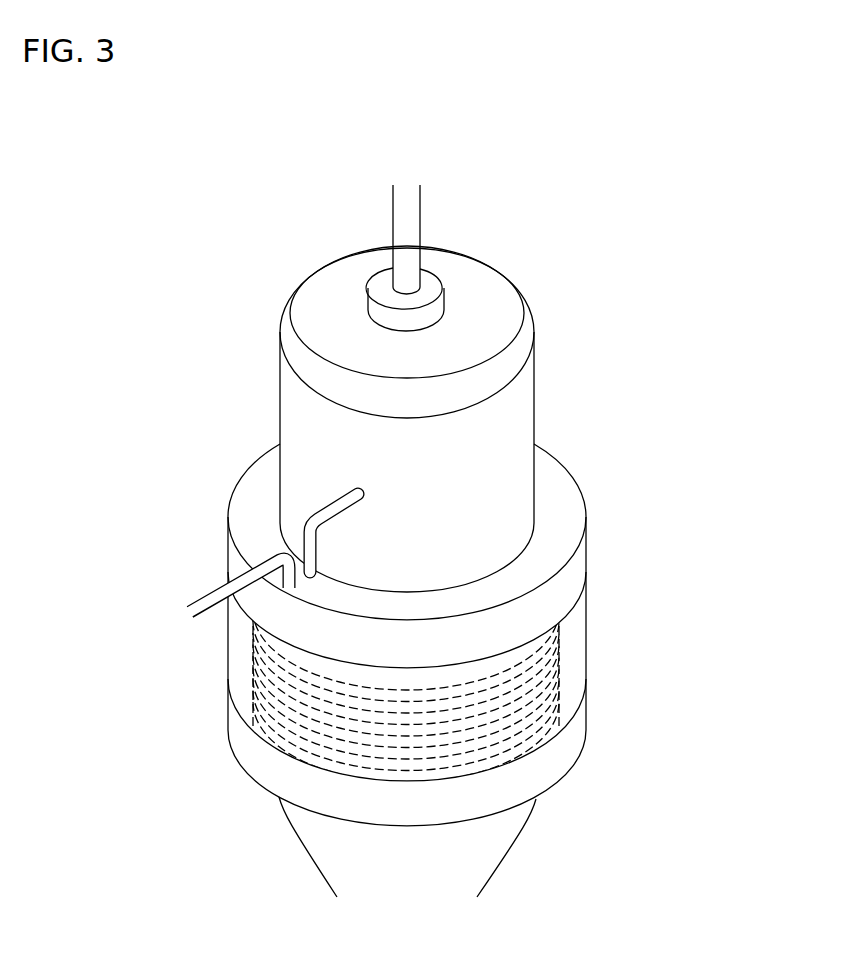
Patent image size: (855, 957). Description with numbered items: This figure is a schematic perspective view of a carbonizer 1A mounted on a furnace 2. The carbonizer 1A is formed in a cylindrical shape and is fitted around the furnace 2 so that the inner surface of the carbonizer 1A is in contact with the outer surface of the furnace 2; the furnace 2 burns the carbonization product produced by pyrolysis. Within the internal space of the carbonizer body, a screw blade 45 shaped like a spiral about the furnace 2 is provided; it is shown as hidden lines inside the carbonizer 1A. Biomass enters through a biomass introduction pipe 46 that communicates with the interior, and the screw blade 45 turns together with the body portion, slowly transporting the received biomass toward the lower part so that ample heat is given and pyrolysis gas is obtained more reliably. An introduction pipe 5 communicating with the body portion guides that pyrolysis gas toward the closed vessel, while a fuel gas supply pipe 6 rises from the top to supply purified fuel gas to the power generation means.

The carbonizer 1A is at (578, 489).
The furnace 2 is at (279, 373).
The introduction pipe 5 is at (330, 505).
The fuel gas supply pipe 6 is at (420, 213).
The screw blade 45 is at (557, 637).
The biomass introduction pipe 46 is at (210, 598).